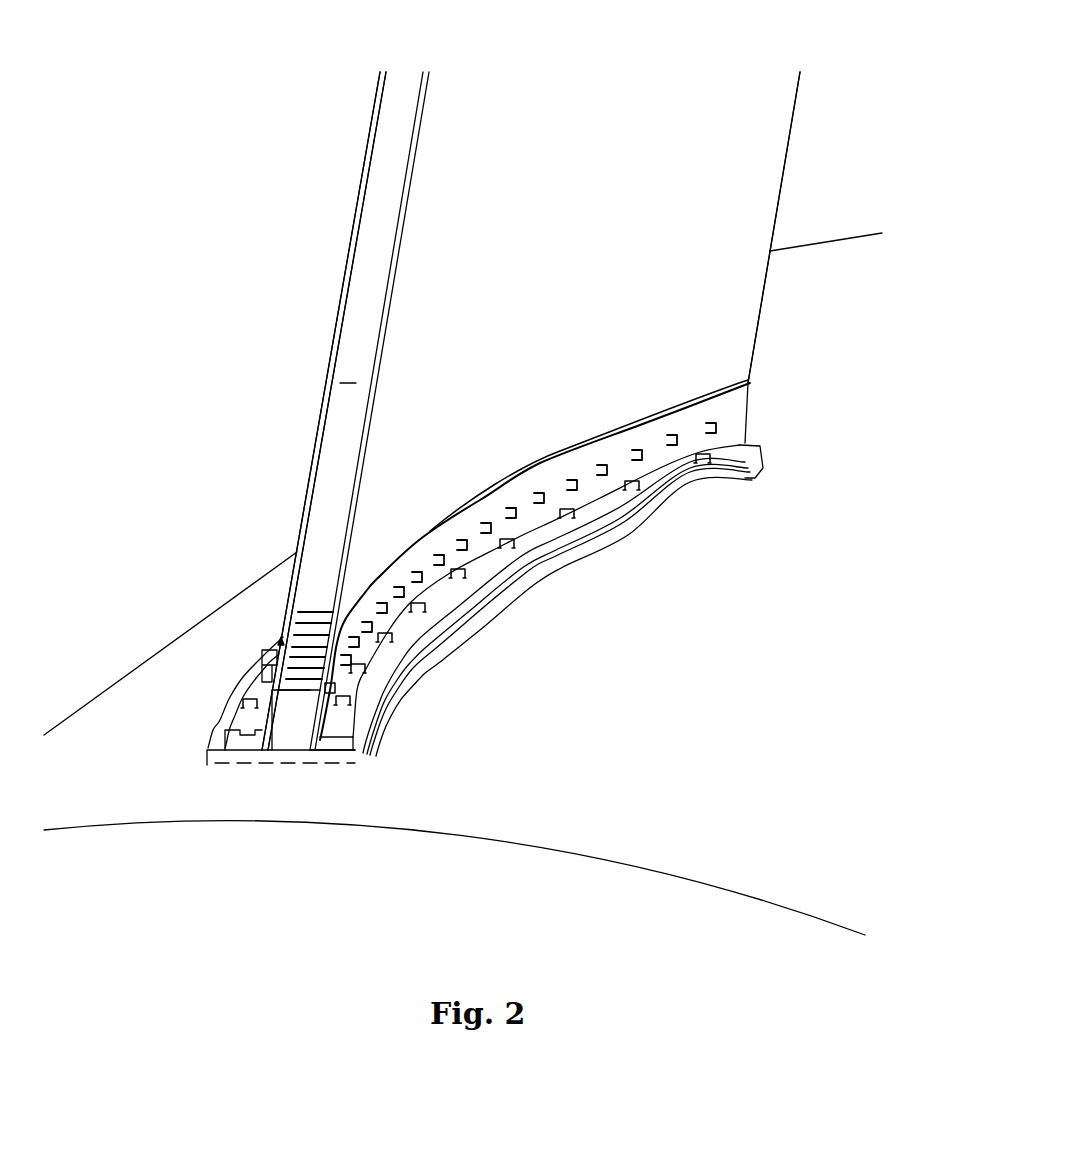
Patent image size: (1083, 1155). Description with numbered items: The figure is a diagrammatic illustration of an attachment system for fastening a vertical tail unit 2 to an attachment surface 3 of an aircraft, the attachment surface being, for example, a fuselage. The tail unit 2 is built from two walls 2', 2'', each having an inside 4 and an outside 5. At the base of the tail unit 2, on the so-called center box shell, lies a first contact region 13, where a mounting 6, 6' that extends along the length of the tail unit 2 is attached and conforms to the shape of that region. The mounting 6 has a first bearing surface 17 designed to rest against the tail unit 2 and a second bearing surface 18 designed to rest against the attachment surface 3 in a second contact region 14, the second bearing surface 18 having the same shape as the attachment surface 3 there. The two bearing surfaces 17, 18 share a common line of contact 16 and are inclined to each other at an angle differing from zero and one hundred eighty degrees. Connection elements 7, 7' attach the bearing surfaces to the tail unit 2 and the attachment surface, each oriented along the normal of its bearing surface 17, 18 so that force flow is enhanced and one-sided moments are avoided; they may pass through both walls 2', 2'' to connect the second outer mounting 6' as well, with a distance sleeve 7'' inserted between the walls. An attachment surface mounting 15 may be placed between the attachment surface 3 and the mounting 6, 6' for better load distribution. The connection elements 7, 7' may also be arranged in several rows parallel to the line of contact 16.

The vertical tail unit 2 is at (333, 411).
The wall of the vertical tail unit 2' is at (305, 411).
The wall of the vertical tail unit 2'' is at (773, 227).
The attachment surface 3 is at (152, 658).
The inside 4 is at (328, 430).
The outside 5 is at (722, 318).
The mounting 6 is at (341, 818).
The second outer mounting 6' is at (192, 763).
The connection element 7 is at (528, 553).
The connection element 7' is at (518, 607).
The distance sleeve 7'' is at (260, 790).
The first contact region 13 is at (767, 383).
The second contact region 14 is at (355, 772).
The attachment surface mounting 15 is at (207, 757).
The line of contact 16 is at (597, 503).
The first bearing surface 17 is at (728, 437).
The second bearing surface 18 is at (677, 476).